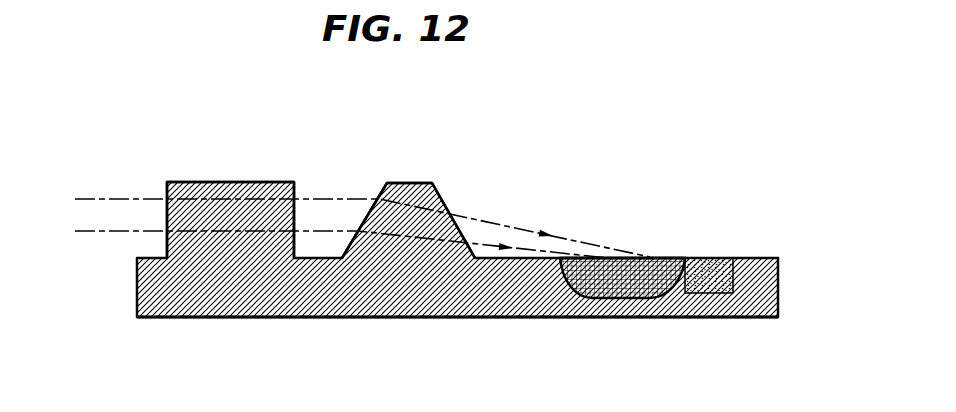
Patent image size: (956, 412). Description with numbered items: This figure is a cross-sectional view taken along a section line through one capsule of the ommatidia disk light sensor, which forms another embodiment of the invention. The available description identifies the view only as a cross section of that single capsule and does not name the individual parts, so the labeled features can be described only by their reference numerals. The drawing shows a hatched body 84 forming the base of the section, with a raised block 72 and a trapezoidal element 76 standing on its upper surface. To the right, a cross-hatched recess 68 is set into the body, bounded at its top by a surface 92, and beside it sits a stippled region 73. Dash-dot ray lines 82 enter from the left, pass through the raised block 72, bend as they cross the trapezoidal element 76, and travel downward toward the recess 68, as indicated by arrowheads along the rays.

The substrate body 84 is at (398, 318).
The raised block 72 is at (221, 182).
The trapezoidal prism element 76 is at (441, 200).
The light receiving well 68 is at (597, 258).
The stippled region 73 is at (722, 260).
The upper surface of well 92 is at (663, 260).
The incident light rays 82 is at (103, 199).